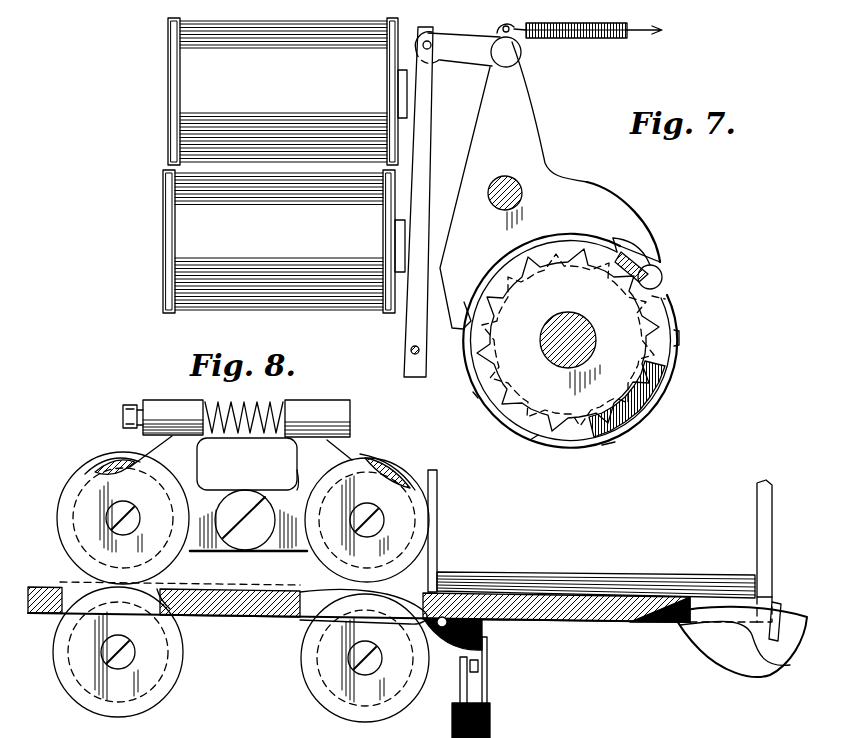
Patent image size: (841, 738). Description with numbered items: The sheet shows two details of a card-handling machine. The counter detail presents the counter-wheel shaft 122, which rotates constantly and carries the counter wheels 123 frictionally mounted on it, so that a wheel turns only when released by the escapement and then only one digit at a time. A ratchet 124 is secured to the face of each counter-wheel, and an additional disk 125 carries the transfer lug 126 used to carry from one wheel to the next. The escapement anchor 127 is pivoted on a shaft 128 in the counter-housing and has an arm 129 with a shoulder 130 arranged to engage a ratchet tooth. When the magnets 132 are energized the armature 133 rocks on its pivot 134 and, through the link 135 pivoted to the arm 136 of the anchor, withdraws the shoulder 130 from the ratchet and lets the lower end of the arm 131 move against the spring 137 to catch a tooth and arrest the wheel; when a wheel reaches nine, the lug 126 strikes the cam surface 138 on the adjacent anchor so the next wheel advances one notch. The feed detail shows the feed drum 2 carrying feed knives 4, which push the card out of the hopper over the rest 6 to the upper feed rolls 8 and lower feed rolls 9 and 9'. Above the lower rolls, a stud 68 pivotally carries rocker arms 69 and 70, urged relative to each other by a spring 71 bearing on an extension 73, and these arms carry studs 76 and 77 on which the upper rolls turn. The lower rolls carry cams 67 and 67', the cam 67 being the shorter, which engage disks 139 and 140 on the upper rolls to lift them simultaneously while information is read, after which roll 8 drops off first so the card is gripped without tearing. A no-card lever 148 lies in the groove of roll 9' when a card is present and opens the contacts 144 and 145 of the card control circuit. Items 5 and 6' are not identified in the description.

In FIG. 7, the counter-wheel shaft 122 is at (556, 352).
In FIG. 7, the counter wheels 123 is at (672, 362).
In FIG. 7, the ratchet 124 is at (532, 403).
In FIG. 7, the additional disk 125 is at (538, 420).
In FIG. 7, the transfer lug 126 is at (667, 298).
In FIG. 7, the escapement anchor 127 is at (584, 195).
In FIG. 7, the shaft 128 is at (505, 178).
In FIG. 7, the arm 129 is at (640, 243).
In FIG. 7, the shoulder 130 is at (646, 278).
In FIG. 7, the arm 131 is at (455, 330).
In FIG. 7, the magnets 132 is at (190, 125).
In FIG. 7, the armature 133 is at (415, 190).
In FIG. 7, the pivot 134 is at (410, 350).
In FIG. 7, the link 135 is at (469, 60).
In FIG. 7, the arm 136 is at (517, 107).
In FIG. 7, the spring 137 is at (605, 37).
In FIG. 7, the cam surface 138 is at (622, 265).
In FIG. 8, the cam surface 138 is at (520, 576).
In FIG. 8, the feed drum 2 is at (726, 658).
In FIG. 8, the feed knives 4 is at (781, 604).
In FIG. 8, the carriage 5 is at (598, 566).
In FIG. 8, the rest 6 is at (492, 559).
In FIG. 8, the wheel 6' is at (390, 520).
In FIG. 8, the upper feed roll 8 is at (72, 481).
In FIG. 8, the lower feed roll 9 is at (133, 652).
In FIG. 8, the lower feed roll 9' is at (371, 658).
In FIG. 8, the cam 67 is at (179, 587).
In FIG. 8, the cam 67' is at (391, 598).
In FIG. 8, the stud 68 is at (245, 500).
In FIG. 8, the rocker arm 69 is at (208, 497).
In FIG. 8, the rocker arm 70 is at (283, 497).
In FIG. 8, the spring 71 is at (268, 398).
In FIG. 8, the extension 73 is at (325, 407).
In FIG. 8, the stud 76 is at (110, 520).
In FIG. 8, the stud 77 is at (382, 525).
In FIG. 8, the disk 139 is at (118, 462).
In FIG. 8, the disk 140 is at (393, 468).
In FIG. 8, the contacts 144 is at (488, 682).
In FIG. 8, the contacts 145 is at (462, 690).
In FIG. 8, the no-card lever 148 is at (264, 606).